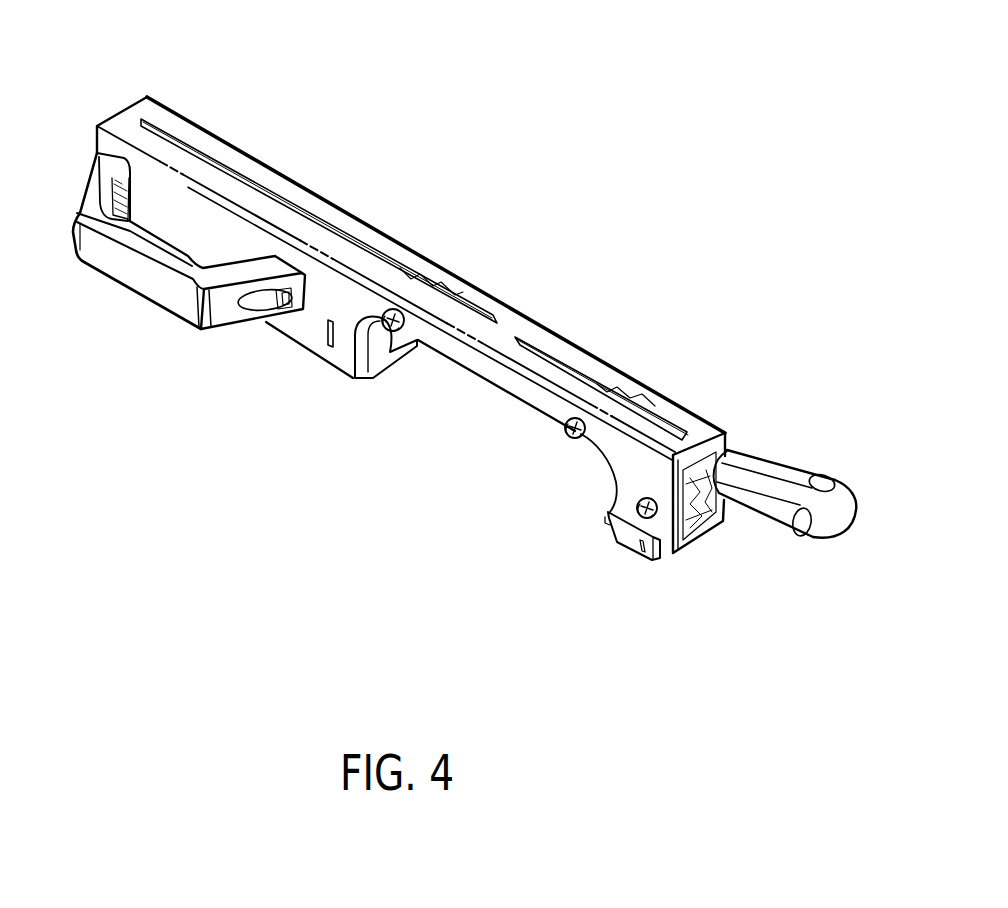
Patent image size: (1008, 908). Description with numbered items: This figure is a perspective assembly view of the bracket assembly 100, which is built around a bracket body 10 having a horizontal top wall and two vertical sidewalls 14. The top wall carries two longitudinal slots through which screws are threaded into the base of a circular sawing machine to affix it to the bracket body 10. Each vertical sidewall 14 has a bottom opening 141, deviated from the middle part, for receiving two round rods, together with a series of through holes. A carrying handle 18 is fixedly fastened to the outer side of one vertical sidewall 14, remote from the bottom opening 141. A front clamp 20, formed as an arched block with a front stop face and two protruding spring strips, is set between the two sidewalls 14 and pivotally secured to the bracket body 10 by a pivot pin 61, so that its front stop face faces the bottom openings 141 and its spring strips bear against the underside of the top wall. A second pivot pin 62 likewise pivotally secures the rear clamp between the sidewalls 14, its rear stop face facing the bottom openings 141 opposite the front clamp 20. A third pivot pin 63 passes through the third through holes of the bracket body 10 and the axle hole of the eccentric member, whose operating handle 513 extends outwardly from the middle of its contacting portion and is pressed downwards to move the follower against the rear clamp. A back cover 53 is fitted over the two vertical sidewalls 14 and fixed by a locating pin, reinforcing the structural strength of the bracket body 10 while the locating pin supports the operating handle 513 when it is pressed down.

The bracket assembly 100 is at (435, 104).
The bracket body 10 is at (539, 297).
The vertical sidewall 14 is at (303, 338).
The bottom opening 141 is at (510, 413).
The carrying handle 18 is at (124, 274).
The front clamp 20 is at (360, 396).
The pivot pin 61 is at (394, 308).
The pivot pin 62 is at (586, 418).
The pivot pin 63 is at (636, 505).
The back cover 53 is at (630, 540).
The operating handle 513 is at (802, 464).